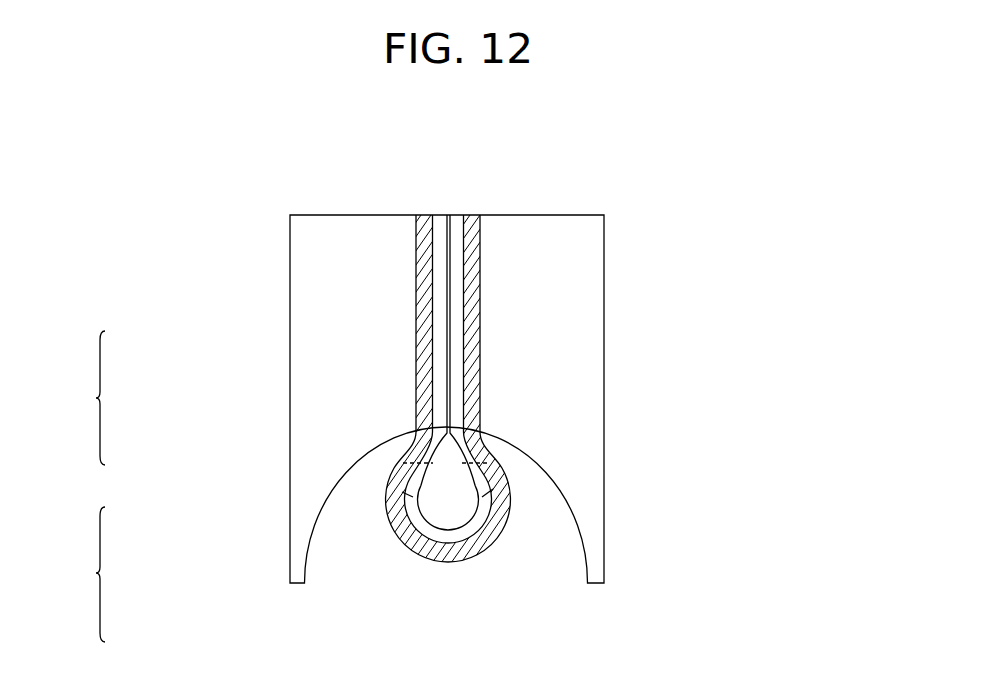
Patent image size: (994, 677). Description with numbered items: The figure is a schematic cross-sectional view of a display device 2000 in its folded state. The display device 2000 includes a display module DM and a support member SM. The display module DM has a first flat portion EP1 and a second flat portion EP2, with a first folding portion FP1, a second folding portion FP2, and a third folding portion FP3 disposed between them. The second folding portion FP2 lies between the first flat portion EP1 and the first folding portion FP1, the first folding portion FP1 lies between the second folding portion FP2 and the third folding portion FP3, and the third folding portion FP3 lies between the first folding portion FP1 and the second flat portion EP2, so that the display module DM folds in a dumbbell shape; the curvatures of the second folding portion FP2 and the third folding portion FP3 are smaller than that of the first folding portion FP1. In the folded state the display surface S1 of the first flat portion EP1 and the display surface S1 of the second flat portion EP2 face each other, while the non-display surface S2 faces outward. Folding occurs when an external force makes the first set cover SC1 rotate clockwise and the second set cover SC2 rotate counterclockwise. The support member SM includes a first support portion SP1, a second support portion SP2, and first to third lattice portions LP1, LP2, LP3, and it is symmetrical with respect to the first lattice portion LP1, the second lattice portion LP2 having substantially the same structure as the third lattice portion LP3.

The display device 2000 is at (641, 194).
The first flat portion EP1 is at (440, 260).
The second flat portion EP2 is at (460, 260).
The display surface S1 is at (450, 297).
The non-display surface S2 is at (468, 337).
The first support portion SP1 is at (420, 373).
The second support portion SP2 is at (478, 375).
The first set cover SC1 is at (312, 408).
The second set cover SC2 is at (583, 409).
The first folding portion FP1 is at (425, 545).
The second folding portion FP2 is at (413, 441).
The third folding portion FP3 is at (483, 442).
The first lattice portion LP1 is at (470, 550).
The second lattice portion LP2 is at (398, 448).
The third lattice portion LP3 is at (498, 450).
The display module DM is at (105, 399).
The support member SM is at (105, 574).